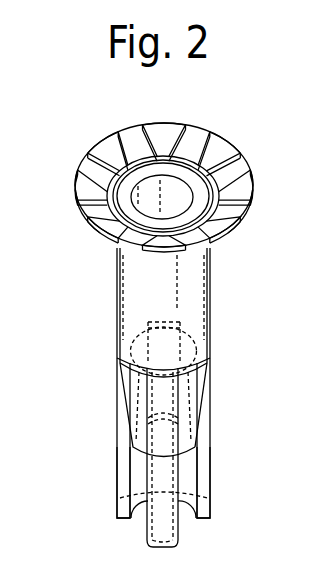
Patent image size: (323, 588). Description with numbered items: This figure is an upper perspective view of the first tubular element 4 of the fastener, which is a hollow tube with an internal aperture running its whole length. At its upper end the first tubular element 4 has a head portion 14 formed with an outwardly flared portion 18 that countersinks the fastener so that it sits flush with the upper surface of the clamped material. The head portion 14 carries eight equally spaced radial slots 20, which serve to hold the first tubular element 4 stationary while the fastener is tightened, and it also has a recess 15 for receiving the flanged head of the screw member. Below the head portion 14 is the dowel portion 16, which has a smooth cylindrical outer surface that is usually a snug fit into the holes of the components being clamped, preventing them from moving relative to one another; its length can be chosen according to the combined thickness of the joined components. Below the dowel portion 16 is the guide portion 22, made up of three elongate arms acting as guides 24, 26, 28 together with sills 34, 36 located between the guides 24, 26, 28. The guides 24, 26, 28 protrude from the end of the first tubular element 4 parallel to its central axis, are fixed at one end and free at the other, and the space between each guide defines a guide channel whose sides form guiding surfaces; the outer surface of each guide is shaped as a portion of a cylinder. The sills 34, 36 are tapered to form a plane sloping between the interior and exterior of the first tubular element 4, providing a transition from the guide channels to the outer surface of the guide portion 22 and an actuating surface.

The first tubular element 4 is at (179, 399).
The head portion 14 is at (167, 166).
The recess 15 is at (120, 201).
The dowel portion 16 is at (125, 304).
The outwardly flared portion 18 is at (85, 178).
The radial slots 20 is at (219, 128).
The guide portion 22 is at (179, 436).
The guide 24 is at (118, 470).
The guide 26 is at (158, 527).
The guide 28 is at (205, 478).
The sill 34 is at (130, 397).
The sill 36 is at (198, 404).